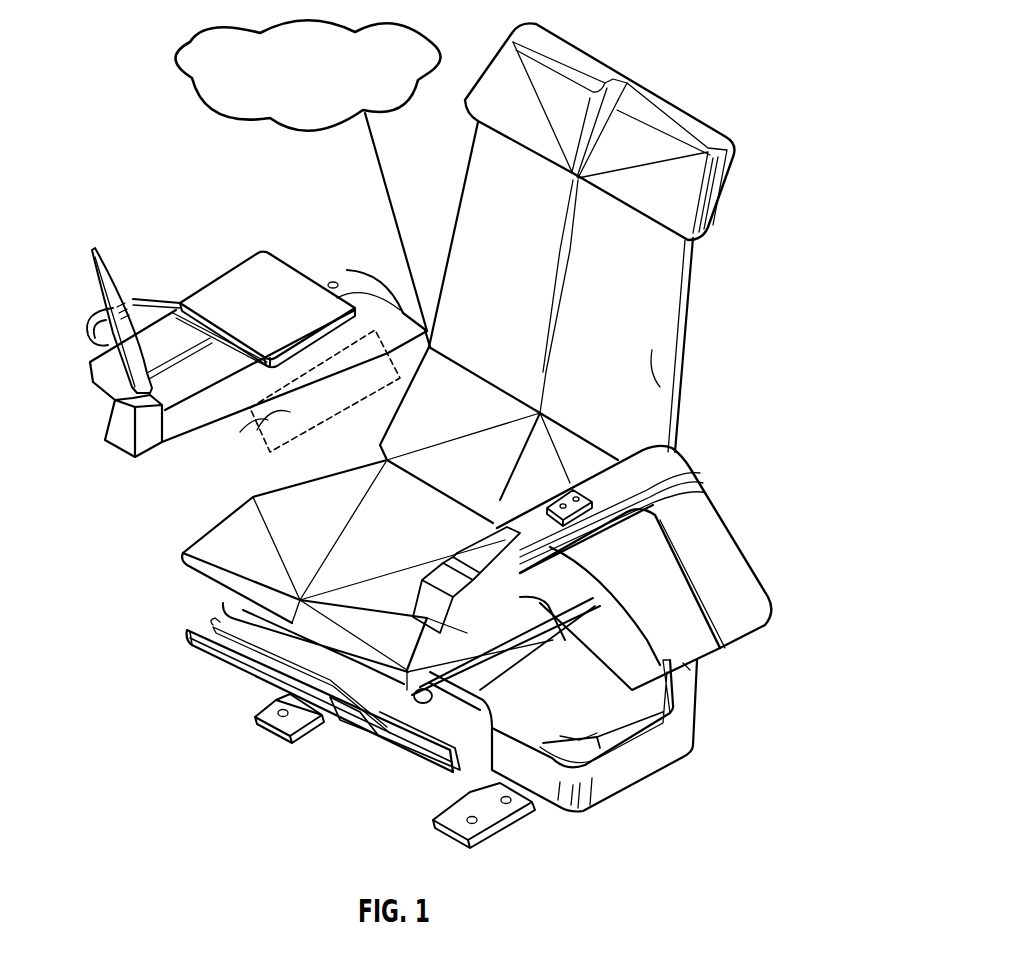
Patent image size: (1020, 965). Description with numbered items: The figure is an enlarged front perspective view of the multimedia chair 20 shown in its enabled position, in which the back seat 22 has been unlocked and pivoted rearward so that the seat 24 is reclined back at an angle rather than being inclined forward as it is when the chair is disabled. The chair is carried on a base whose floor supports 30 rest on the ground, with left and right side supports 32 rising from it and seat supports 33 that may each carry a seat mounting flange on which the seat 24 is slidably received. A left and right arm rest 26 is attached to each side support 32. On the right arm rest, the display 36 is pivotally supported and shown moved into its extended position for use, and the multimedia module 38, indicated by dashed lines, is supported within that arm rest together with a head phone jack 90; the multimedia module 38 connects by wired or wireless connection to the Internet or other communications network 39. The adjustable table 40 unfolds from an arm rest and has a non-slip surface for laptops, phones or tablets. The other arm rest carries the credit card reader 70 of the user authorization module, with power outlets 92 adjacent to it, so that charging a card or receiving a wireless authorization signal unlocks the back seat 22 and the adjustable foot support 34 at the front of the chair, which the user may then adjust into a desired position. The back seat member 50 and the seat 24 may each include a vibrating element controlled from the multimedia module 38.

The multimedia chair 20 is at (475, 443).
The back seat 22 is at (705, 263).
The seat 24 is at (183, 556).
The arm rest 26 is at (355, 270).
The floor supports 30 is at (493, 810).
The side supports 32 is at (672, 748).
The seat supports 33 is at (548, 699).
The adjustable foot support 34 is at (373, 755).
The display 36 is at (117, 290).
The multimedia module 38 is at (257, 430).
The communications network 39 is at (427, 37).
The adjustable table 40 is at (215, 277).
The back seat member 50 is at (660, 387).
The credit card reader 70 is at (683, 663).
The head phone jack 90 is at (331, 282).
The power outlets 92 is at (640, 483).